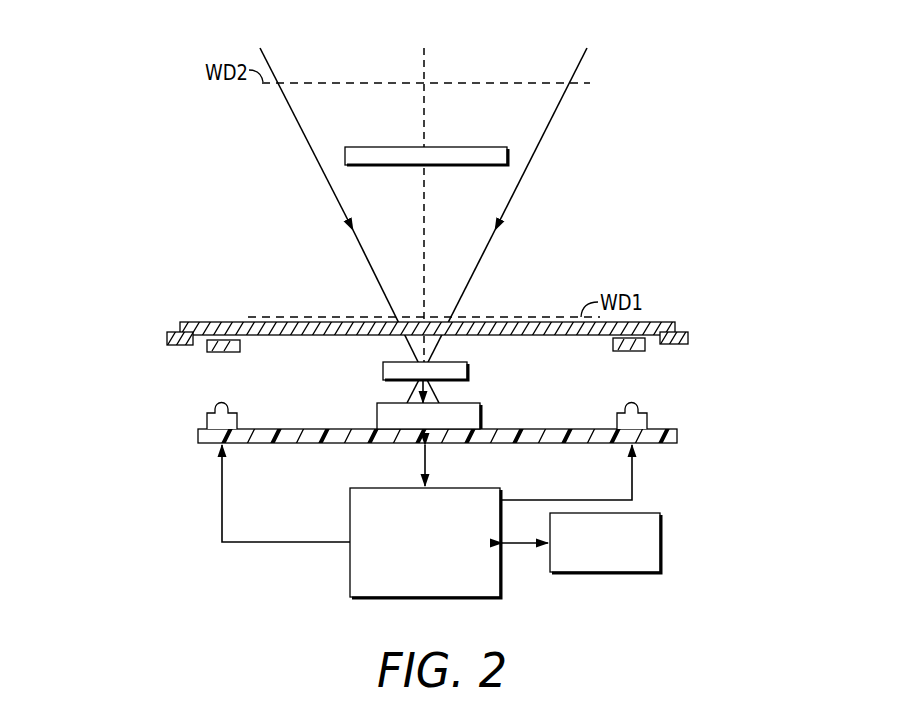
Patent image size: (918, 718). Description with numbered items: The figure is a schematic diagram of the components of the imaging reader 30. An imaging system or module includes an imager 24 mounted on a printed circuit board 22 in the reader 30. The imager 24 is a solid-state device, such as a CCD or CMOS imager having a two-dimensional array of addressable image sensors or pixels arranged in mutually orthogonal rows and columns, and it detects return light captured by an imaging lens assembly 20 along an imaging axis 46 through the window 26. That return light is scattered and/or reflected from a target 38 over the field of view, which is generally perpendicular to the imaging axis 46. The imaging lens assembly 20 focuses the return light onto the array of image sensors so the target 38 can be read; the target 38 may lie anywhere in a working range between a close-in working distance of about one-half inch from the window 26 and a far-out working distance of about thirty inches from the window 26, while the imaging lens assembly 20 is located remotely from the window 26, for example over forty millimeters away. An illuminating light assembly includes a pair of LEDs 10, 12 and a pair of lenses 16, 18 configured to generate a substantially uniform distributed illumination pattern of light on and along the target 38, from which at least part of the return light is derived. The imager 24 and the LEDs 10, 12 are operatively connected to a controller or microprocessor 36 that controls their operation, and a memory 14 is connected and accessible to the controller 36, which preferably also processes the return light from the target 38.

The light emitting diode 10 is at (647, 416).
The light emitting diode 12 is at (207, 416).
The memory 14 is at (650, 513).
The lens 16 is at (630, 352).
The lens 18 is at (222, 353).
The imaging lens assembly 20 is at (383, 371).
The printed circuit board 22 is at (527, 444).
The imager 24 is at (377, 412).
The window 26 is at (192, 324).
The reader 30 is at (576, 256).
The controller 36 is at (363, 488).
The target 38 is at (490, 147).
The imaging axis 46 is at (428, 65).